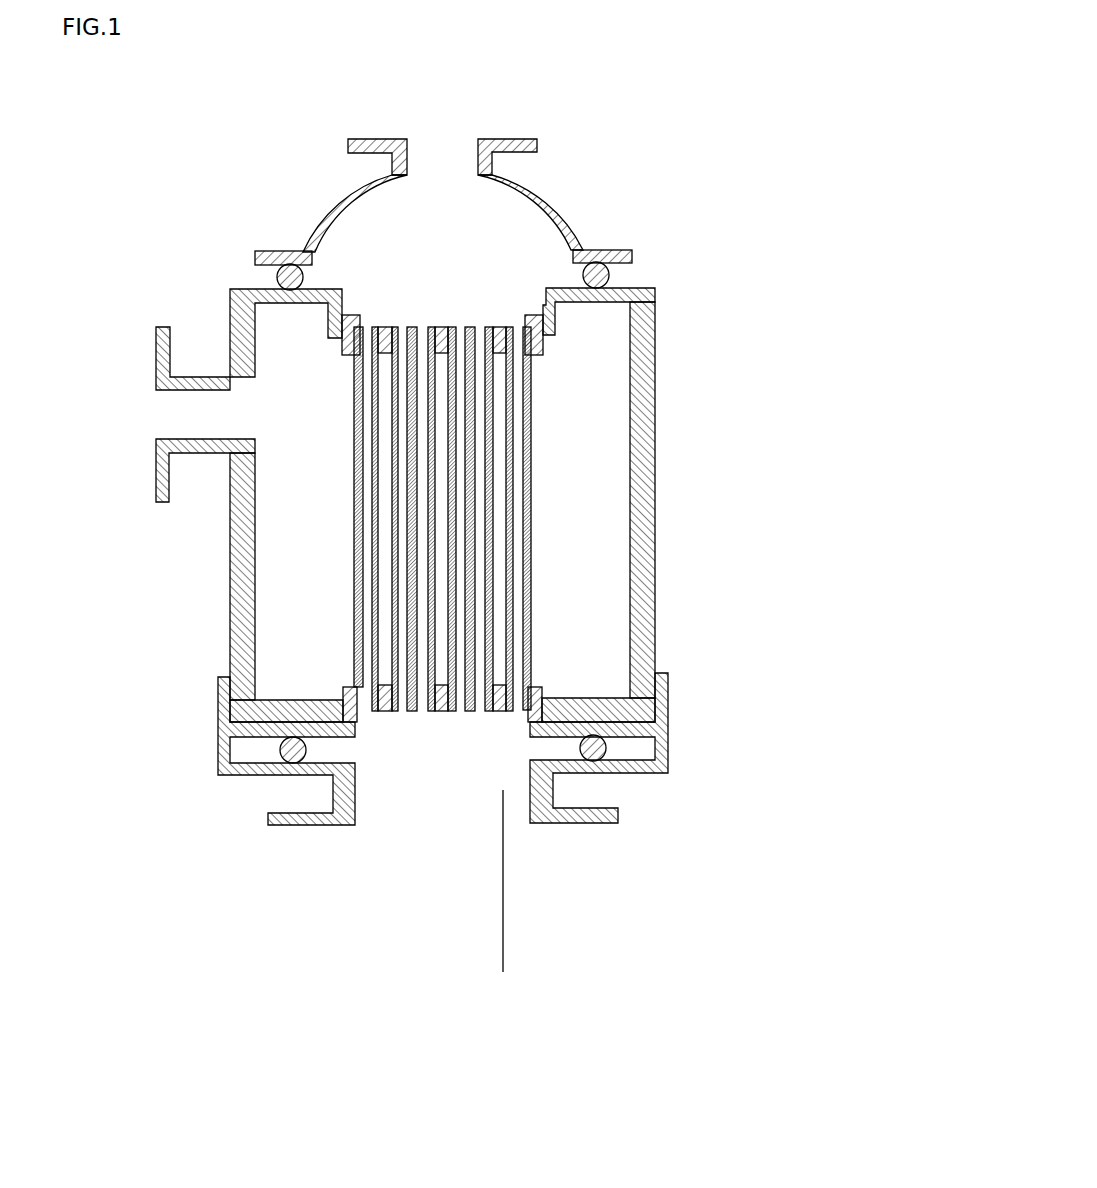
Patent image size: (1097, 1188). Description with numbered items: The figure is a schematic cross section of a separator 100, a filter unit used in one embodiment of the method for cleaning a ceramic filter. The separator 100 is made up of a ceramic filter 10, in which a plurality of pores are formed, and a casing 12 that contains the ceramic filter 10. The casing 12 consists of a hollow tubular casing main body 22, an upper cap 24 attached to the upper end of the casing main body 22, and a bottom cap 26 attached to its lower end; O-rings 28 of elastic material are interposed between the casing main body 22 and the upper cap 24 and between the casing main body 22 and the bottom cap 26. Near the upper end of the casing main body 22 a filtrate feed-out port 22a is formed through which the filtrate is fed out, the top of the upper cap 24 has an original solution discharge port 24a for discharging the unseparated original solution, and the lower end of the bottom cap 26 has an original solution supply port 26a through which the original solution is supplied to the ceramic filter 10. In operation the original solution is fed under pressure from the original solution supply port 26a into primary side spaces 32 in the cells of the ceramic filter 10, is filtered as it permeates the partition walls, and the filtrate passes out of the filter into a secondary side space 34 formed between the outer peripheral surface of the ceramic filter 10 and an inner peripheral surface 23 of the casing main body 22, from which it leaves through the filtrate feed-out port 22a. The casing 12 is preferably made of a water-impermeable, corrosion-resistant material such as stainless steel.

The separator 100 is at (722, 121).
The ceramic filter 10 is at (437, 322).
The casing 12 is at (633, 239).
The casing main body 22 is at (648, 431).
The filtrate feed-out port 22a is at (187, 417).
The inner peripheral surface 23 is at (253, 622).
The upper cap 24 is at (552, 203).
The original solution discharge port 24a is at (450, 150).
The bottom cap 26 is at (668, 715).
The original solution supply port 26a is at (418, 803).
The O-ring 28 is at (277, 280).
The primary side space 32 is at (365, 695).
The secondary side space 34 is at (280, 512).